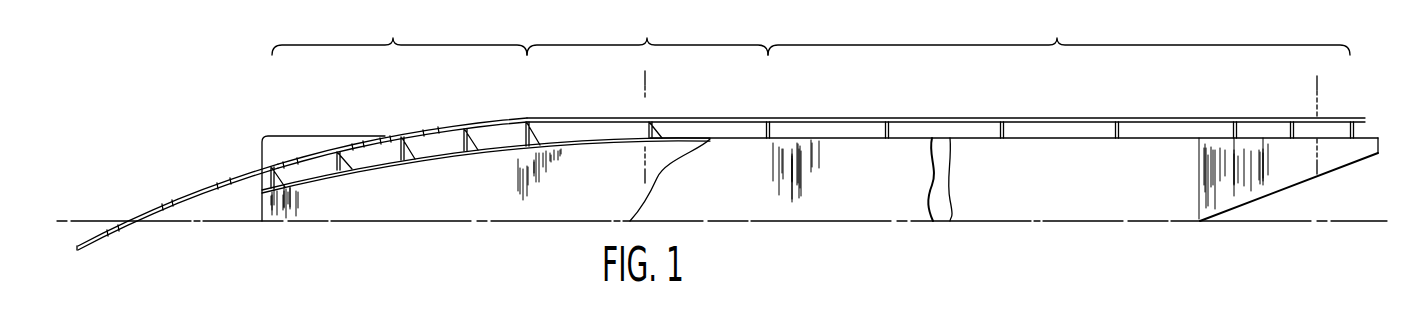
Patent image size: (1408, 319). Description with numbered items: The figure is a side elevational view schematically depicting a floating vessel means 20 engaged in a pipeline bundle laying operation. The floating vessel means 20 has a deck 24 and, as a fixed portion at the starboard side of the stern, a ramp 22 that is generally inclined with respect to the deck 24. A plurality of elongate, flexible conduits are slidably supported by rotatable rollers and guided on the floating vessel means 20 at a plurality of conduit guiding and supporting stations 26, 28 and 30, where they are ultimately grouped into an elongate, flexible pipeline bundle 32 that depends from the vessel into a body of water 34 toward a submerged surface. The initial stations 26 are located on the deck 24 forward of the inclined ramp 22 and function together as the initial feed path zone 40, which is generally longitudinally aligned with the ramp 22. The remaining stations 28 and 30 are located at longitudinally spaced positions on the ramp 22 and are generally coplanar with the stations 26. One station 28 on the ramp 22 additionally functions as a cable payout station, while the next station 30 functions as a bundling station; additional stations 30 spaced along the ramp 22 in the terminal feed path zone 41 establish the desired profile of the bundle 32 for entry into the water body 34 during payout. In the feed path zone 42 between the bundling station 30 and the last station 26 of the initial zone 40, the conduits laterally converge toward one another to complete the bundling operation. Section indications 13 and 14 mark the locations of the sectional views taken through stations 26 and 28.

The section line 13- 13 is at (1315, 83).
The section line 14- 14 is at (643, 78).
The floating vessel means 20 is at (1383, 160).
The ramp 22 is at (371, 168).
The deck 24 is at (327, 135).
The conduit guiding and supporting stations 26 is at (768, 117).
The conduit guiding and supporting station 28 is at (650, 117).
The conduit guiding and supporting stations 30 is at (336, 147).
The pipeline bundle 32 is at (189, 197).
The body of water 34 is at (376, 251).
The initial feed path zone 40 is at (1059, 35).
The terminal feed path zone 41 is at (399, 35).
The feed path zone 42 is at (647, 35).